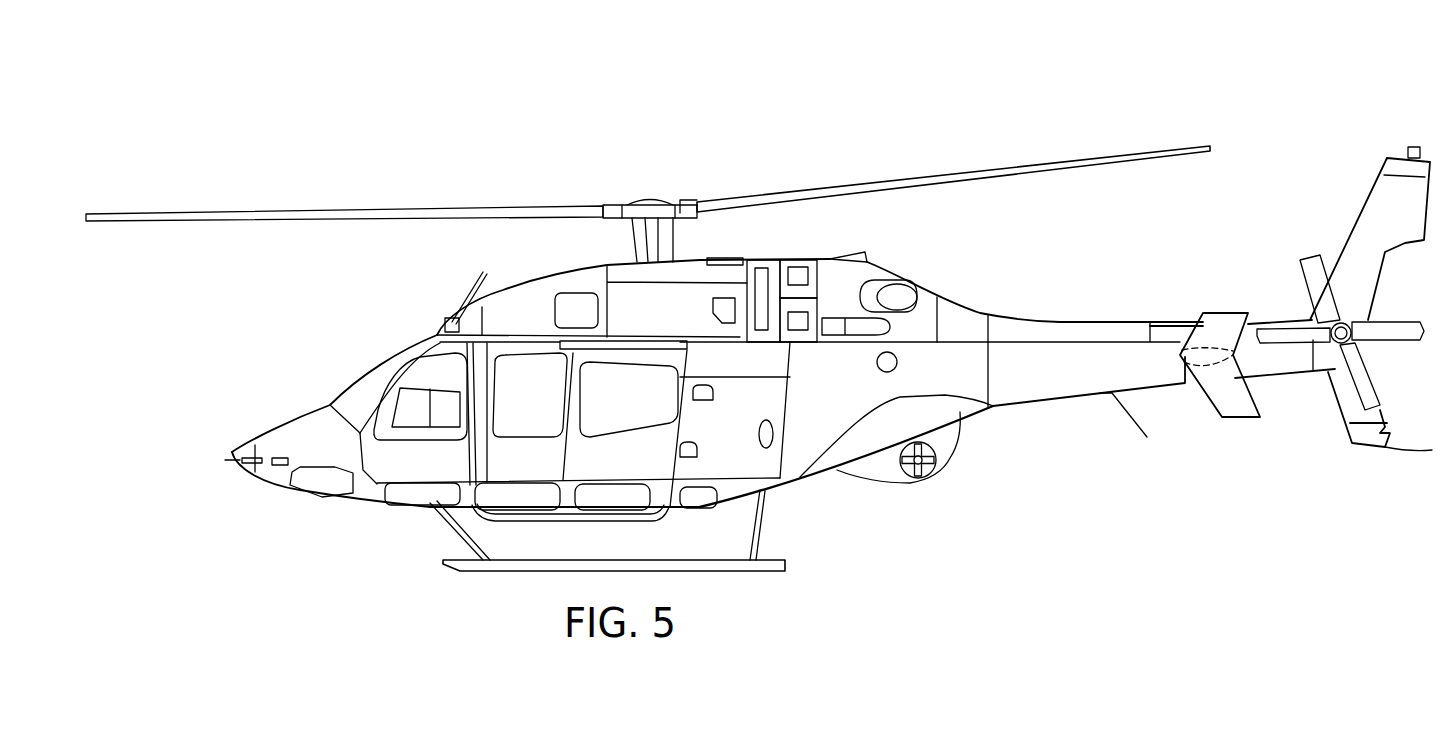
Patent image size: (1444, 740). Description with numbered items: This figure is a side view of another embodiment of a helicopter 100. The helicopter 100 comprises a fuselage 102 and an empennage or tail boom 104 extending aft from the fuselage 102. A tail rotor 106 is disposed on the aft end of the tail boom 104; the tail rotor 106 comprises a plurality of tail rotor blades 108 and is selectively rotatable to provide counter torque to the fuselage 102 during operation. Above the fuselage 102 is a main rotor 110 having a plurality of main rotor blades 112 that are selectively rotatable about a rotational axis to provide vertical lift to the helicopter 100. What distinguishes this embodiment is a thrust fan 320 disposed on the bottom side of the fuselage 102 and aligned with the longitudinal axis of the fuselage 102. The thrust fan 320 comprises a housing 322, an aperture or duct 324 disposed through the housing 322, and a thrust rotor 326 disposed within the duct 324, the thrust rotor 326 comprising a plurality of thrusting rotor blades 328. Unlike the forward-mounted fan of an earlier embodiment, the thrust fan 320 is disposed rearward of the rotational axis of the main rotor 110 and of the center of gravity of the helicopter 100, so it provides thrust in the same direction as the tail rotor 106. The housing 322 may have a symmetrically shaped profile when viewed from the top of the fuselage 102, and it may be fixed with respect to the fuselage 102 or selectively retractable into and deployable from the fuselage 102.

The helicopter 100 is at (121, 116).
The fuselage 102 is at (273, 427).
The tail boom 104 is at (1077, 322).
The tail rotor 106 is at (1375, 353).
The tail rotor blades 108 is at (1400, 322).
The main rotor 110 is at (629, 188).
The main rotor blades 112 is at (345, 210).
The thrust fan 320 is at (861, 491).
The housing 322 is at (955, 463).
The duct 324 is at (935, 482).
The thrust rotor 326 is at (937, 444).
The thrusting rotor blades 328 is at (903, 483).